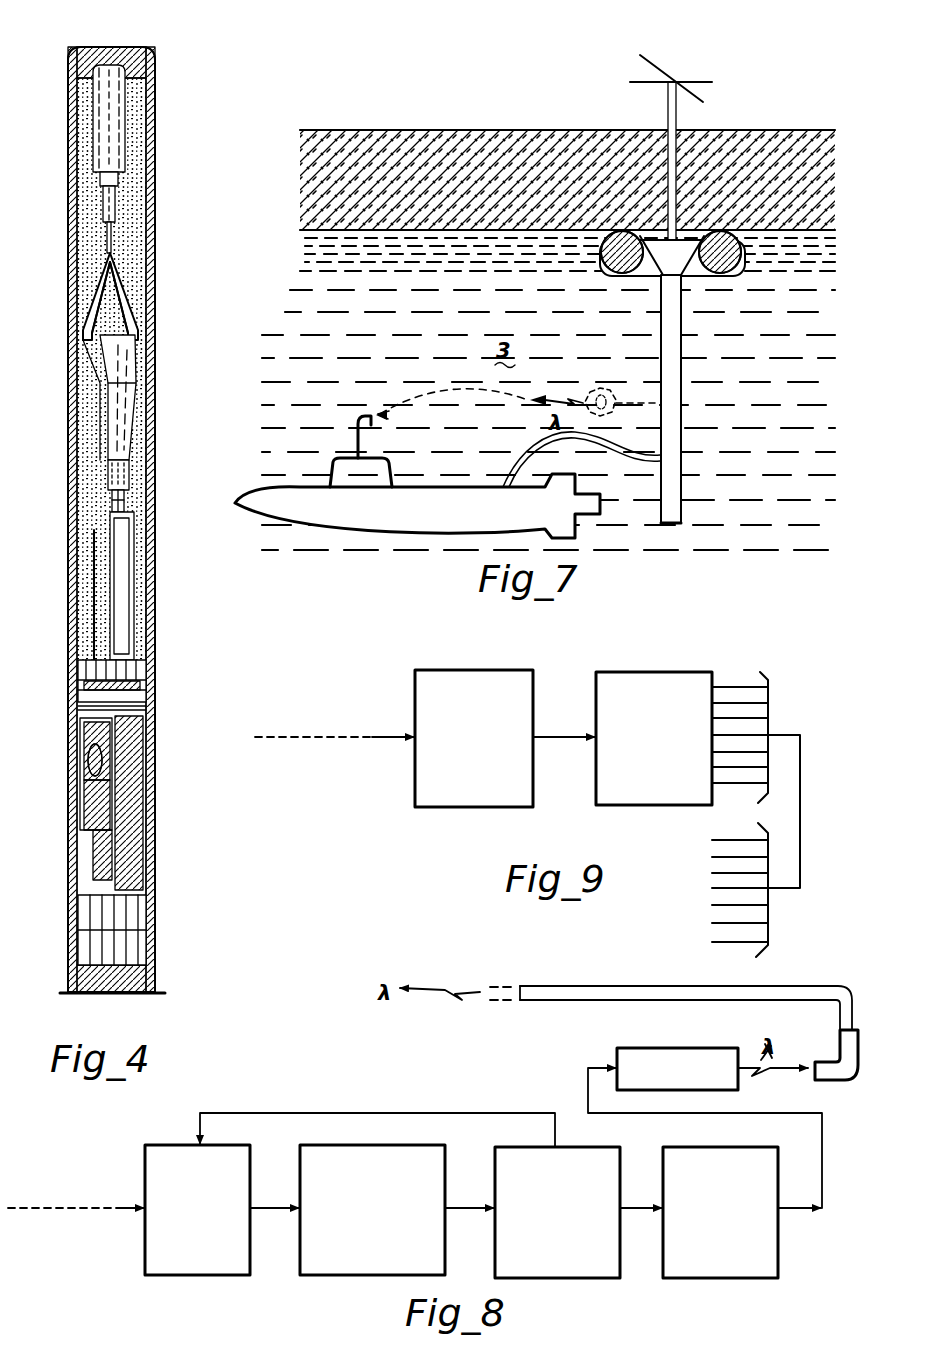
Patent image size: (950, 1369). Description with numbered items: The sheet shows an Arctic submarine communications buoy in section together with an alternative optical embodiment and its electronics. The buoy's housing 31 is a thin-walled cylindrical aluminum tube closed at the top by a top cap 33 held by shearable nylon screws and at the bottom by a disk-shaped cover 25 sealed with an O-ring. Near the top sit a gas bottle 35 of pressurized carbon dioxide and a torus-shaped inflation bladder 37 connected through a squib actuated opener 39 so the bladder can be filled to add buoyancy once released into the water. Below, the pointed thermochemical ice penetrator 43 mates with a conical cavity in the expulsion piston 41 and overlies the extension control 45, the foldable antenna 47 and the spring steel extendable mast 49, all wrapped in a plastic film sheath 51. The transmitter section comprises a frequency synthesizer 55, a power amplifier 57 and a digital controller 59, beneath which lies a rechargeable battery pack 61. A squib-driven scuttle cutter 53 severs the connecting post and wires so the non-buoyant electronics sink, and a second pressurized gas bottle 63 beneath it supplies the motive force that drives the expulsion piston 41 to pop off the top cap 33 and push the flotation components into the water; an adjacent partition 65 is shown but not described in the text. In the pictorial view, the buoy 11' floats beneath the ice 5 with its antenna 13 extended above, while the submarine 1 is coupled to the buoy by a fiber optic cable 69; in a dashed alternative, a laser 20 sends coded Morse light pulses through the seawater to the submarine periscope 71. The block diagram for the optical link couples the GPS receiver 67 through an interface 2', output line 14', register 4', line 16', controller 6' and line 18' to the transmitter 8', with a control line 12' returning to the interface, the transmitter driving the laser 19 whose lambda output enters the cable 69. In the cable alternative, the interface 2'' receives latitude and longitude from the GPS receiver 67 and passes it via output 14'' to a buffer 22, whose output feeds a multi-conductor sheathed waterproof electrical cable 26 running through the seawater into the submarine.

In FIG. 4, the top cap 33 is at (130, 47).
In FIG. 4, the housing 31 is at (147, 122).
In FIG. 7, the housing 31 is at (681, 405).
In FIG. 4, the gas bottle 35 is at (140, 170).
In FIG. 4, the squib actuated opener 39 is at (137, 205).
In FIG. 4, the inflation bladder 37 is at (137, 248).
In FIG. 4, the expulsion piston 41 is at (130, 292).
In FIG. 4, the thermochemical ice penetrator 43 is at (137, 424).
In FIG. 4, the extension control 45 is at (130, 475).
In FIG. 4, the plastic film sheath 51 is at (100, 512).
In FIG. 4, the foldable antenna 47 is at (126, 556).
In FIG. 4, the extendable mast 49 is at (120, 614).
In FIG. 4, the scuttle cutter 53 is at (140, 692).
In FIG. 4, the partition 65 is at (146, 712).
In FIG. 4, the second pressurized gas bottle 63 is at (88, 760).
In FIG. 4, the power amplifier 57 is at (107, 795).
In FIG. 4, the digital controller 59 is at (130, 829).
In FIG. 4, the frequency synthesizer 55 is at (104, 858).
In FIG. 4, the rechargeable battery pack 61 is at (136, 923).
In FIG. 4, the bottom end cover 25 is at (128, 988).
In FIG. 7, the ice 5 is at (520, 138).
In FIG. 7, the antenna 13 is at (671, 164).
In FIG. 7, the buoy 11' is at (672, 272).
In FIG. 7, the submarine 1 is at (444, 487).
In FIG. 7, the submarine periscope 71 is at (356, 440).
In FIG. 7, the laser 20 is at (617, 380).
In FIG. 7, the fiber optic cable 69 is at (545, 446).
In FIG. 8, the fiber optic cable 69 is at (608, 1002).
In FIG. 9, the GPS receiver 67 is at (334, 749).
In FIG. 8, the GPS receiver 67 is at (74, 1223).
In FIG. 9, the interface 2'' is at (474, 725).
In FIG. 9, the output 14'' is at (564, 721).
In FIG. 9, the buffer 22 is at (663, 672).
In FIG. 9, the multi-conductor sheathed waterproof electrical cable 26 is at (800, 820).
In FIG. 8, the interface 2' is at (197, 1198).
In FIG. 8, the output line 14' is at (274, 1192).
In FIG. 8, the register 4' is at (372, 1198).
In FIG. 8, the output line 16' is at (469, 1192).
In FIG. 8, the controller 6' is at (557, 1199).
In FIG. 8, the output line 18' is at (641, 1192).
In FIG. 8, the transmitter 8' is at (720, 1199).
In FIG. 8, the control line 12' is at (377, 1112).
In FIG. 8, the laser 19 is at (675, 1048).